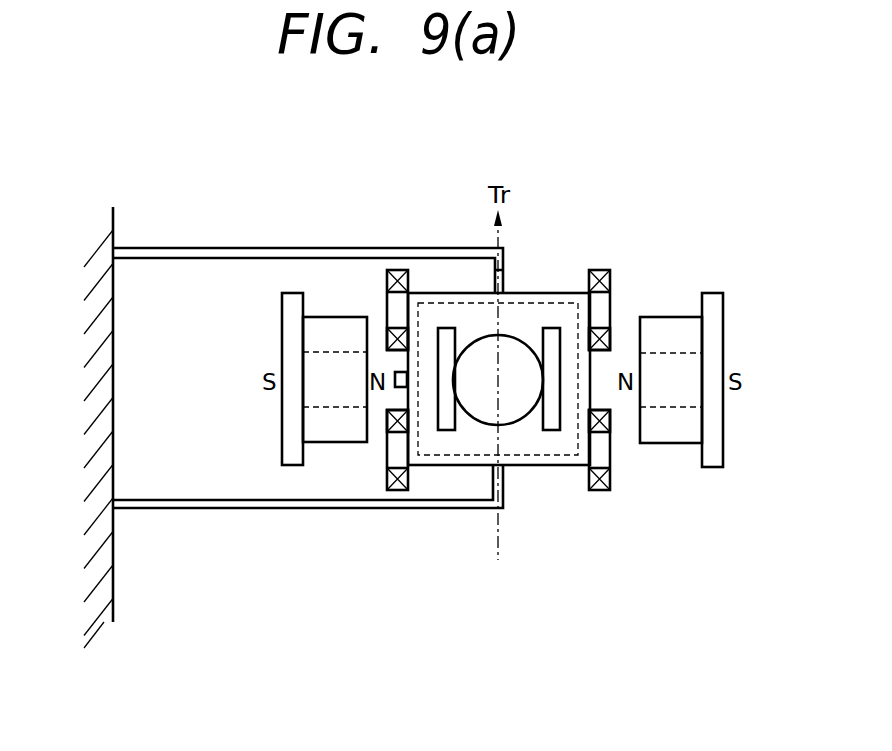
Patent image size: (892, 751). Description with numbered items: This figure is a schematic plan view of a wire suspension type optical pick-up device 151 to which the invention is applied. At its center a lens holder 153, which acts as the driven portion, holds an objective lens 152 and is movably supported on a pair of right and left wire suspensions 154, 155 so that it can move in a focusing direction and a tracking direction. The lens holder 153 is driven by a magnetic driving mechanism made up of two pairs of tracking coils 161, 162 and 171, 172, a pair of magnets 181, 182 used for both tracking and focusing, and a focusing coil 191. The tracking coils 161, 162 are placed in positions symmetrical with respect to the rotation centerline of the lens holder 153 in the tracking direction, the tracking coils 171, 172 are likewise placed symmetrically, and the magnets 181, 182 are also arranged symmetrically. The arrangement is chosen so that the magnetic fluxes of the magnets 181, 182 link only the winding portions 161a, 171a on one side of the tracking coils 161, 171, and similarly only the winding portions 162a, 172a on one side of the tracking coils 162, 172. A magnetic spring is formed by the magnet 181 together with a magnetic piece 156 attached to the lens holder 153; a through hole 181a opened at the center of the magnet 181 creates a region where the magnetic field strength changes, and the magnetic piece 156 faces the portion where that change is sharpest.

The optical pick-up device 151 is at (582, 228).
The objective lens 152 is at (525, 402).
The lens holder 153 is at (440, 472).
The wire suspension 154 is at (172, 508).
The wire suspension 155 is at (250, 250).
The magnetic piece 156 is at (410, 375).
The tracking coil 161 is at (387, 450).
The winding portion 161a is at (387, 417).
The tracking coil 162 is at (612, 300).
The winding portion 162a is at (612, 338).
The tracking coil 171 is at (385, 307).
The winding portion 171a is at (387, 340).
The tracking coil 172 is at (610, 460).
The winding portion 172a is at (610, 425).
The magnet 181 is at (310, 432).
The through hole 181a is at (303, 405).
The magnet 182 is at (692, 428).
The focusing coil 191 is at (523, 457).